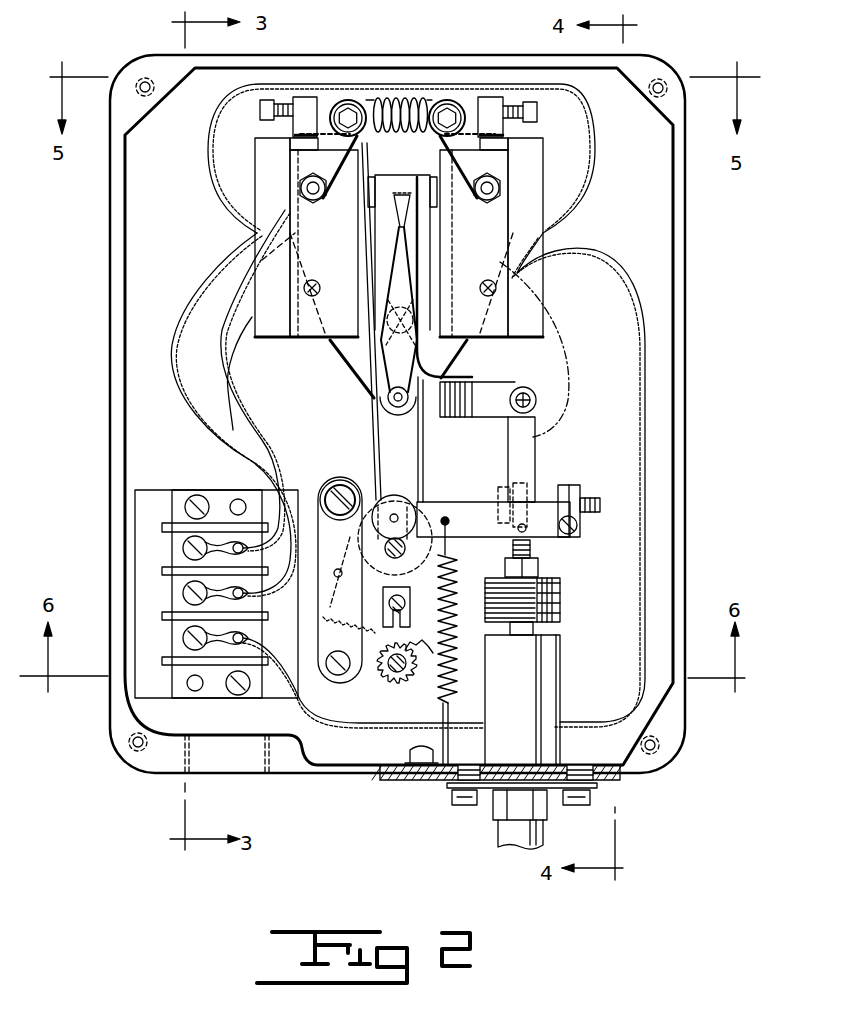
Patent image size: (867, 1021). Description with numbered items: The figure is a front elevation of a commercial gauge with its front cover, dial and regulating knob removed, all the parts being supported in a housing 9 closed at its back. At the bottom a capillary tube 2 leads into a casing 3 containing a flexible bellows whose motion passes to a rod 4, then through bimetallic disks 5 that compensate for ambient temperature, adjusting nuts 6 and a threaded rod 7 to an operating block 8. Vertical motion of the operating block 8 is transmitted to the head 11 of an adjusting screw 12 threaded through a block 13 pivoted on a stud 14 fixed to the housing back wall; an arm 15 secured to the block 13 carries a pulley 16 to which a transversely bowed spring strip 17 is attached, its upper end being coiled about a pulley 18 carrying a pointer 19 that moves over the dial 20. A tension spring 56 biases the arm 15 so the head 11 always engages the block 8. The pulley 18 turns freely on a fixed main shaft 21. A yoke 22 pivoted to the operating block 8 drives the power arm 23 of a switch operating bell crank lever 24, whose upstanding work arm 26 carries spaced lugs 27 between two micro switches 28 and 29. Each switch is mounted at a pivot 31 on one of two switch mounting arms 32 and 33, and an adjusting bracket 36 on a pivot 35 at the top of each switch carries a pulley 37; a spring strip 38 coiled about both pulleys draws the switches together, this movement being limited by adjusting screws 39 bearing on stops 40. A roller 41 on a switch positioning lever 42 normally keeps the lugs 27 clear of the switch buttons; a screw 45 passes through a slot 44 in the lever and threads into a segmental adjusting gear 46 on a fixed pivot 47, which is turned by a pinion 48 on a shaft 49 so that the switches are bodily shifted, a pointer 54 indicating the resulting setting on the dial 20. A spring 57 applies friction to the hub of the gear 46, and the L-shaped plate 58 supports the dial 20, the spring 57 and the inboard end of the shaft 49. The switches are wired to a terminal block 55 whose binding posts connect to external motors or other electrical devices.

The capillary tube 2 is at (498, 842).
The casing 3 is at (522, 700).
The rod 4 is at (533, 627).
The bimetallic disks 5 is at (560, 598).
The adjusting nuts 6 is at (537, 570).
The threaded rod 7 is at (530, 547).
The operating block 8 is at (500, 497).
The housing 9 is at (688, 255).
The head 11 is at (530, 478).
The adjusting screw 12 is at (602, 503).
The block 13 is at (570, 487).
The stud 14 is at (580, 525).
The arm 15 is at (493, 519).
The pulley 16 is at (393, 494).
The spring strip 17 is at (383, 440).
The pulley 18 is at (403, 422).
The pointer 19 is at (410, 257).
The dial 20 is at (217, 422).
The main shaft 21 is at (373, 405).
The yoke 22 is at (533, 437).
The power arm 23 is at (477, 399).
The switch operating bell crank lever 24 is at (523, 385).
The work arm 26 is at (417, 293).
The lugs 27 is at (410, 187).
The switch 28 is at (293, 310).
The switch 29 is at (513, 327).
The pivot 31 is at (312, 290).
The switch mounting arm 32 is at (330, 353).
The switch mounting arm 33 is at (452, 372).
The pivot 35 is at (300, 187).
The adjusting bracket 36 is at (400, 178).
The pulley 37 is at (343, 97).
The spring strip 38 is at (383, 92).
The adjusting screws 39 is at (262, 107).
The stops 40 is at (320, 97).
The roller 41 is at (306, 237).
The switch positioning lever 42 is at (407, 473).
The slot 44 is at (387, 620).
The screw 45 is at (410, 610).
The segmental adjusting gear 46 is at (342, 684).
The pivot 47 is at (350, 550).
The pinion 48 is at (390, 687).
The shaft 49 is at (383, 715).
The pointer 54 is at (397, 213).
The terminal block 55 is at (172, 550).
The tension spring 56 is at (458, 682).
The spring 57 is at (338, 483).
The L-shaped plate 58 is at (363, 685).